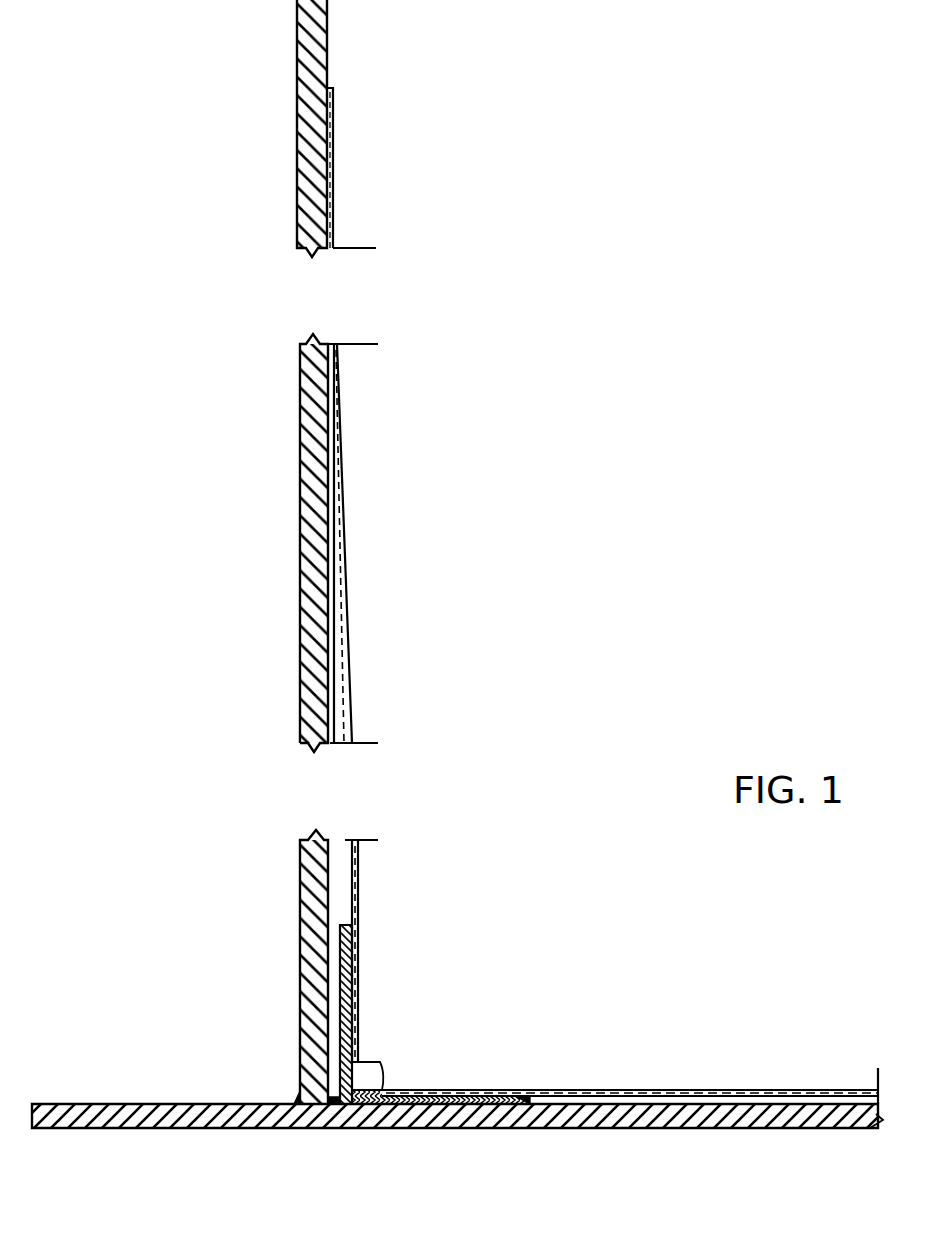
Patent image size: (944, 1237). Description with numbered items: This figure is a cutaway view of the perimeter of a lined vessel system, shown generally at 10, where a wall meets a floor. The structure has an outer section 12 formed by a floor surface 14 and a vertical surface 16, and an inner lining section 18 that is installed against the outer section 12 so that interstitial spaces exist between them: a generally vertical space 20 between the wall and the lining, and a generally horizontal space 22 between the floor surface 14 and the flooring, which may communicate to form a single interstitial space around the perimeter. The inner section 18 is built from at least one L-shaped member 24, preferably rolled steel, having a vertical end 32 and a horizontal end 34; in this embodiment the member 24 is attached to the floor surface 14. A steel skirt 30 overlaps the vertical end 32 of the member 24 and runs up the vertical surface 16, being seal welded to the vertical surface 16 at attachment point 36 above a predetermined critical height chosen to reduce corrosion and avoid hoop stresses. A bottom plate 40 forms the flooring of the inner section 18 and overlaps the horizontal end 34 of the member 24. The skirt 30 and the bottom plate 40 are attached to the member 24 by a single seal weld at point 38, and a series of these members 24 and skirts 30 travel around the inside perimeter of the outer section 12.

The wall and floor waterproofing assembly 10 is at (457, 1006).
The outer section 12 is at (316, 543).
The floor surface 14 is at (648, 1120).
The vertical surface 16 is at (300, 588).
The inner section 18 is at (615, 1086).
The vertical interstitial space 20 is at (340, 884).
The horizontal interstitial space 22 is at (727, 1094).
The L-shaped member 24 is at (342, 958).
The skirt 30 is at (345, 538).
The vertical end 32 is at (352, 1055).
The horizontal end 34 is at (488, 1100).
The attachment point 36 is at (333, 90).
The seal weld point 38 is at (380, 1062).
The bottom plate 40 is at (810, 1088).